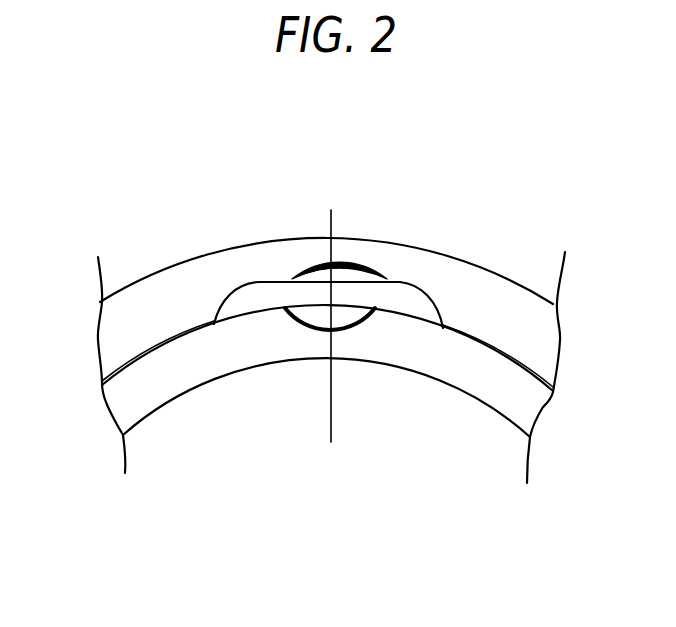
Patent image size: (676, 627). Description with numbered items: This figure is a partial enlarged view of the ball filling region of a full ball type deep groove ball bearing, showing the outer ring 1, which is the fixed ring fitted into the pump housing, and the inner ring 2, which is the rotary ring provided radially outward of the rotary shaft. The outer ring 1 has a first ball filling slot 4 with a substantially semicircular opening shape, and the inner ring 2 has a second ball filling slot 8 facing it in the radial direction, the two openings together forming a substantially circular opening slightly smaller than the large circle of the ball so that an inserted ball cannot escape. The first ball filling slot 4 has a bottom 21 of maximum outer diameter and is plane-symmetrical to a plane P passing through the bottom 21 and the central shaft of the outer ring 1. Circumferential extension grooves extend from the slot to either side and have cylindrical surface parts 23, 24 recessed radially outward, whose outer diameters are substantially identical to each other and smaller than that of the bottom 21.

The outer ring 1 is at (493, 288).
The inner ring 2 is at (487, 385).
The first ball filling slot 4 is at (309, 277).
The second ball filling slot 8 is at (340, 326).
The bottom 21 is at (354, 263).
The cylindrical surface part 23 is at (266, 282).
The cylindrical surface part 24 is at (400, 283).
The plane P is at (322, 218).